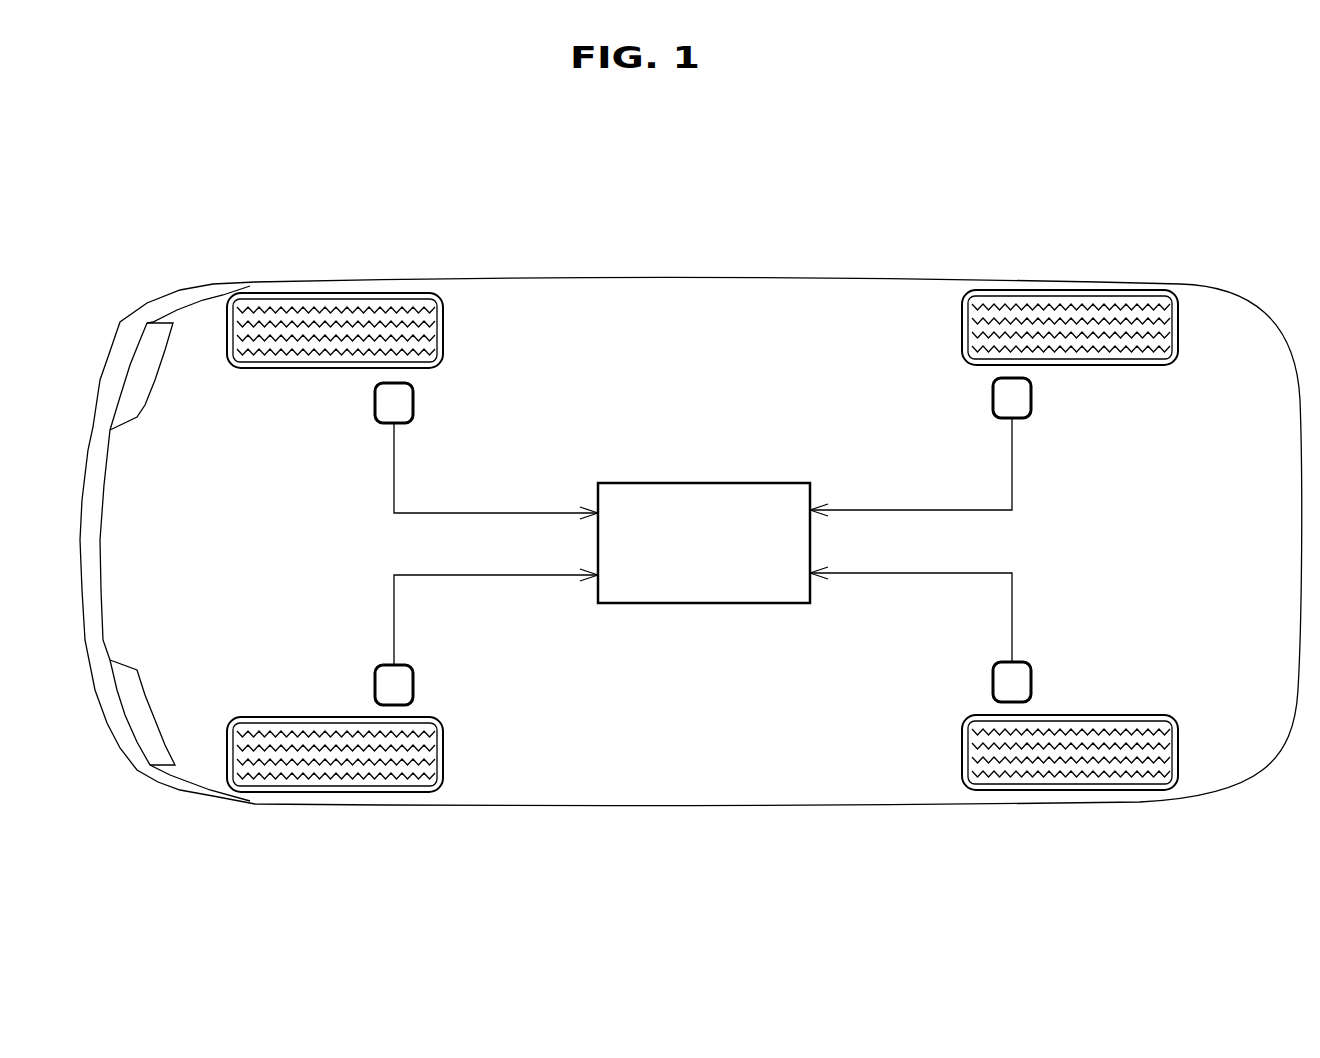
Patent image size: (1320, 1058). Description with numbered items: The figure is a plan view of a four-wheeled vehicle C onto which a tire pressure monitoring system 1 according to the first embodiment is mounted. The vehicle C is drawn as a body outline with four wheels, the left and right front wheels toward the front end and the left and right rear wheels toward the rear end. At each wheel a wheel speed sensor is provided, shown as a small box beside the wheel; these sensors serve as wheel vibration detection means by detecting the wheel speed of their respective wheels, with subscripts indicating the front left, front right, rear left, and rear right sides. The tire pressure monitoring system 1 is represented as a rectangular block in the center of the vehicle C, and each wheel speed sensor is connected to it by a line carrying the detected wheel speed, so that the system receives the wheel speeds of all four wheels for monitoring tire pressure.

The tire pressure monitoring system 1 is at (678, 468).
The vehicle C is at (684, 263).